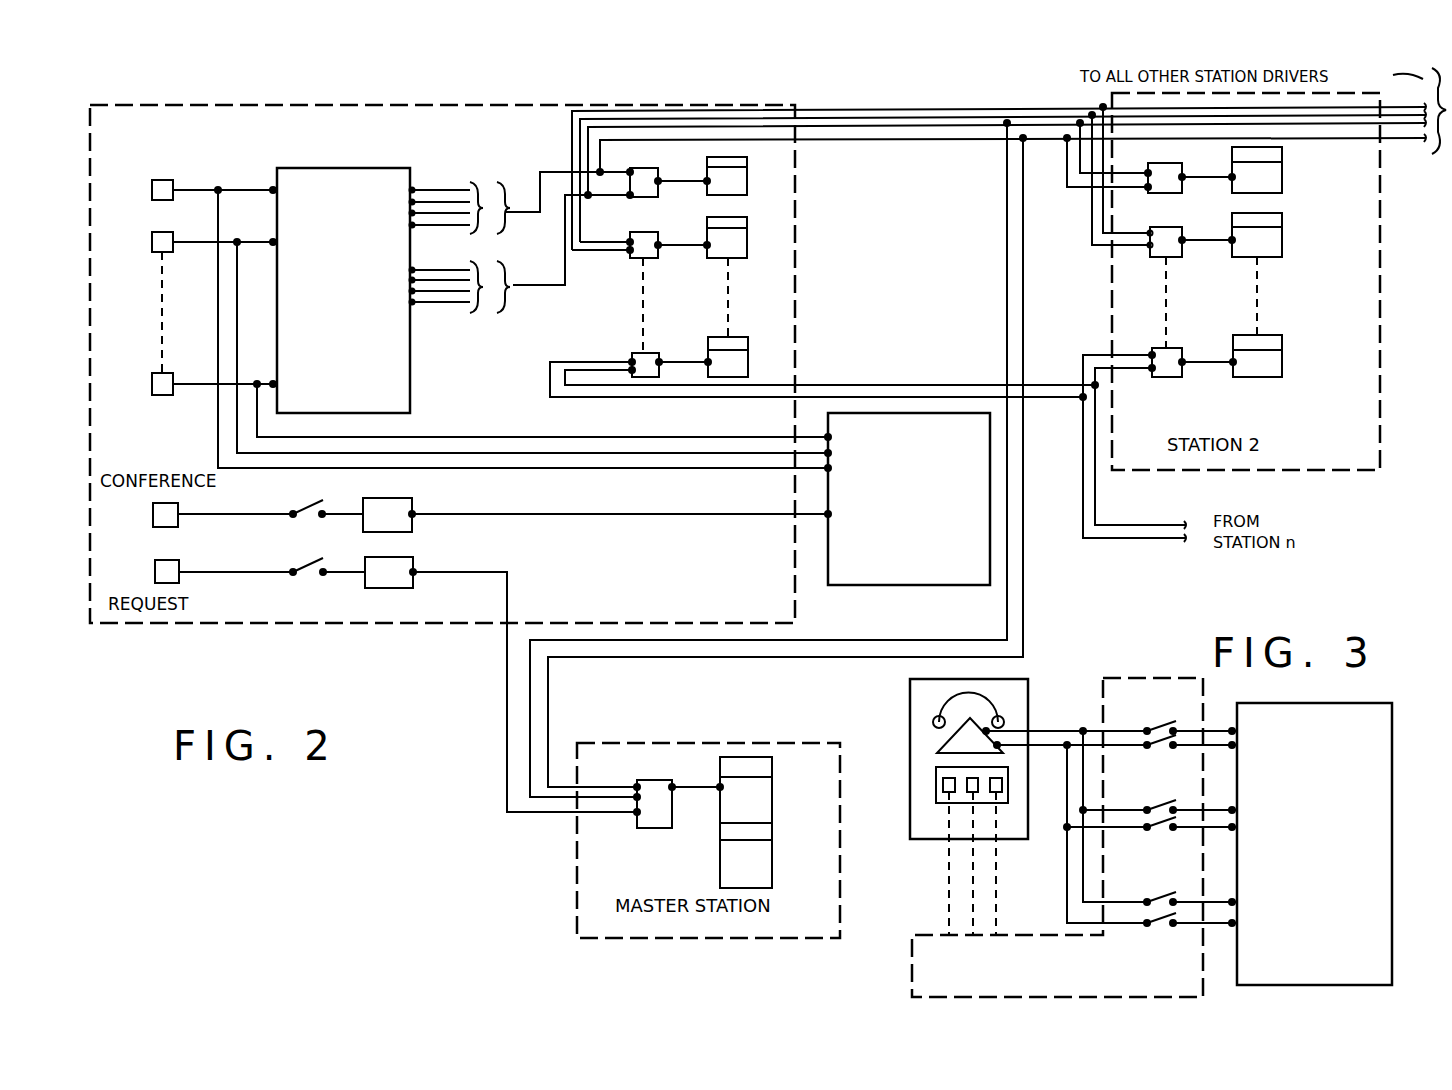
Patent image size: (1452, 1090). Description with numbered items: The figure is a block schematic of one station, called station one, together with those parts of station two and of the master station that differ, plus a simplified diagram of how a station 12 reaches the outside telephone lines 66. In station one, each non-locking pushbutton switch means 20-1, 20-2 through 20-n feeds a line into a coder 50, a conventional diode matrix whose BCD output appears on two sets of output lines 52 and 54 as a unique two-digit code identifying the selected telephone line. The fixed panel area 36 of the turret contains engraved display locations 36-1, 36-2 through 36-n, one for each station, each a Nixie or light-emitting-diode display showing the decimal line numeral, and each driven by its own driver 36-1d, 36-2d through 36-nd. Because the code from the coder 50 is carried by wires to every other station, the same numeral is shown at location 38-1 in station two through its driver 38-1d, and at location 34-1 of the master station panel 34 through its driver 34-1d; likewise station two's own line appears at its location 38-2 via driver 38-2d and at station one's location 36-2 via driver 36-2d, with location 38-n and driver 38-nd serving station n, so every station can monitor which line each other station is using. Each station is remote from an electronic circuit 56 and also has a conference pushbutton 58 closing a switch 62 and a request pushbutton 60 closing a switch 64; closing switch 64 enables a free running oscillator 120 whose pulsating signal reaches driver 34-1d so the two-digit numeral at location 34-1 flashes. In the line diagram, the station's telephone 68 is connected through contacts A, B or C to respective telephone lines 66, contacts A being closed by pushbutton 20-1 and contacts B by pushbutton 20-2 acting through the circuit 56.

In FIG. 3, the station 12 is at (1020, 698).
In FIG. 2, the non-locking pushbutton switch means 20-1 is at (152, 186).
In FIG. 3, the non-locking pushbutton switch means 20-1 is at (948, 794).
In FIG. 2, the non-locking pushbutton switch means 20-2 is at (152, 237).
In FIG. 3, the non-locking pushbutton switch means 20-2 is at (973, 794).
In FIG. 2, the non-locking pushbutton switch means 20-n is at (160, 396).
In FIG. 3, the non-locking pushbutton switch means 20-n is at (995, 794).
In FIG. 2, the master station display panel 34 is at (771, 786).
In FIG. 2, the master station display location 34-1 is at (772, 800).
In FIG. 2, the master station driver 34-1d is at (642, 780).
In FIG. 2, the fixed panel area 36 is at (777, 227).
In FIG. 2, the engraved display location 36-1 is at (747, 178).
In FIG. 2, the engraved display location 36-2 is at (747, 242).
In FIG. 2, the engraved display location 36-n is at (748, 358).
In FIG. 2, the display driver 36-1d is at (665, 166).
In FIG. 2, the display driver 36-2d is at (658, 224).
In FIG. 2, the display driver 36-nd is at (656, 346).
In FIG. 2, the station 2 display location 38-1 is at (1282, 177).
In FIG. 2, the station 2 display location 38-2 is at (1282, 236).
In FIG. 2, the station 2 display location 38-n is at (1279, 389).
In FIG. 2, the station 2 display driver 38-1d is at (1158, 193).
In FIG. 2, the station 2 display driver 38-2d is at (1156, 258).
In FIG. 2, the station 2 display driver 38-nd is at (1167, 377).
In FIG. 2, the coder 50 is at (357, 345).
In FIG. 2, the coder output lines 52 is at (443, 183).
In FIG. 2, the coder output lines 54 is at (442, 310).
In FIG. 2, the electronic circuit 56 is at (880, 586).
In FIG. 3, the electronic circuit 56 is at (1182, 677).
In FIG. 2, the conference pushbutton 58 is at (153, 510).
In FIG. 2, the request pushbutton 60 is at (155, 567).
In FIG. 2, the conference switch 62 is at (306, 499).
In FIG. 2, the request switch 64 is at (308, 555).
In FIG. 3, the telephone lines 66 is at (1318, 924).
In FIG. 3, the telephone 68 is at (943, 703).
In FIG. 2, the free running oscillator 120 is at (373, 590).